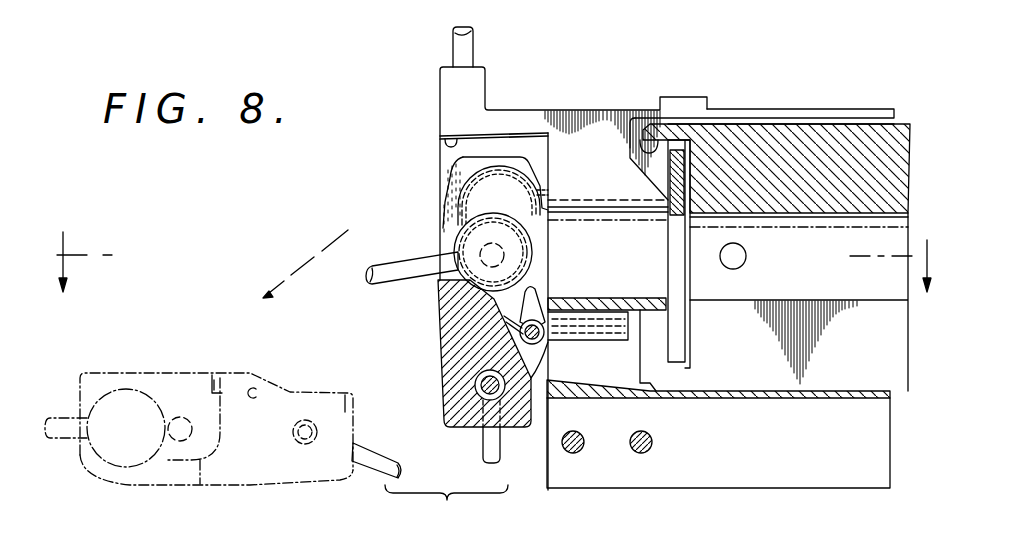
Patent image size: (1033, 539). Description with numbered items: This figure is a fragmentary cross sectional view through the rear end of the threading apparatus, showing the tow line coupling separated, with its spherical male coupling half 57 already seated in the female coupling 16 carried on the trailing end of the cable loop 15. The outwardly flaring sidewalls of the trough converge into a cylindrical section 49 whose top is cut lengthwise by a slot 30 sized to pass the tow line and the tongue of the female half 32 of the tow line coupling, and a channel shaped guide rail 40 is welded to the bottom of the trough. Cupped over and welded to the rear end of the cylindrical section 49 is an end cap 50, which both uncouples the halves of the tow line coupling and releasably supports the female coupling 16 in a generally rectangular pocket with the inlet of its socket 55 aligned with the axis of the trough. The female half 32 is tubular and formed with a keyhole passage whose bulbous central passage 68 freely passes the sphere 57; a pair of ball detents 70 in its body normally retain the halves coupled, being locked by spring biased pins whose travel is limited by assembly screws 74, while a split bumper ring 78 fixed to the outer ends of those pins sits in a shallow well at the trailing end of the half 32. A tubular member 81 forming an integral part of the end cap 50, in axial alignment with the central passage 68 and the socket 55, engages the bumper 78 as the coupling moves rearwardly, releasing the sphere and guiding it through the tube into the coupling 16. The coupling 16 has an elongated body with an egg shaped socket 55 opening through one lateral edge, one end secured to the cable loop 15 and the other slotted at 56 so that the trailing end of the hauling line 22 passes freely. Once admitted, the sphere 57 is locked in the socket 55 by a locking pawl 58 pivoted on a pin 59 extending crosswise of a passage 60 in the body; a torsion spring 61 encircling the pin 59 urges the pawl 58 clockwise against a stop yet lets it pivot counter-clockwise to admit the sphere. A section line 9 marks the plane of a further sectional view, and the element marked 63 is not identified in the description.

The section line 9- 9 is at (494, 250).
The cable loop 15 is at (475, 450).
The female coupling 16 is at (434, 357).
The hauling line 22 is at (387, 262).
The slot 30 is at (783, 112).
The female half 32 is at (852, 124).
The guide rail 40 is at (870, 478).
The cylindrical section 49 is at (791, 400).
The end cap 50 is at (551, 108).
The egg shaped socket 55 is at (462, 212).
The slot 56 is at (470, 165).
The male coupling half 57 is at (533, 241).
The locking pawl 58 is at (540, 291).
The pin 59 is at (545, 340).
The passage 60 is at (446, 141).
The torsion spring 61 is at (530, 325).
The hub 63 is at (509, 245).
The central passage 68 is at (796, 219).
The ball detents 70 is at (743, 262).
The assembly screws 74 is at (650, 150).
The bumper ring 78 is at (667, 180).
The tubular member 81 is at (608, 300).